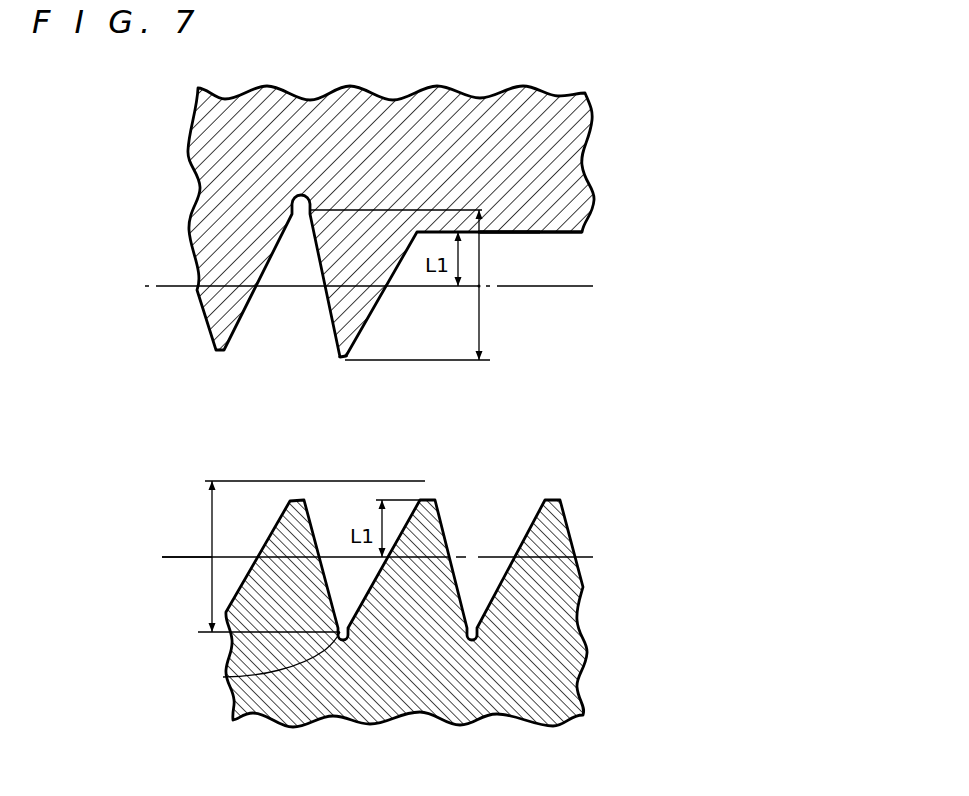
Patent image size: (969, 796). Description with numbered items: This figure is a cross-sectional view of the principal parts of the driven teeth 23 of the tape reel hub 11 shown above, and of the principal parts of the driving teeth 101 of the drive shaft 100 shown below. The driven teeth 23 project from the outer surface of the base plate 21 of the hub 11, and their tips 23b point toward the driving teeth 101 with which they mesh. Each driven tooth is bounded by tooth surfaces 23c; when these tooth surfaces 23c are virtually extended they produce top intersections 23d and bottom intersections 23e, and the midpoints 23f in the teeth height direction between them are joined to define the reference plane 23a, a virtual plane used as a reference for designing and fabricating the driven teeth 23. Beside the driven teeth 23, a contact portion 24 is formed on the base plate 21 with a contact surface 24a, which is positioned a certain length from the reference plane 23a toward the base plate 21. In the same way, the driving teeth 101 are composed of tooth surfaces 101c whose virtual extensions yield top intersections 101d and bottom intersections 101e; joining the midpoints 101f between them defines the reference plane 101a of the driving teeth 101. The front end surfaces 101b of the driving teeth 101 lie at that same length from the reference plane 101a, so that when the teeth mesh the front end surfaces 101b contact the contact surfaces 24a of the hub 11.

The hub 11 is at (402, 238).
The base plate 21 is at (580, 136).
The driven teeth 23 is at (197, 292).
The reference plane 23a is at (552, 289).
The tooth tips 23b is at (342, 358).
The tooth surfaces 23c is at (200, 300).
The top intersections 23d is at (348, 356).
The bottom intersections 23e is at (300, 200).
The midpoints 23f is at (488, 289).
The contact portions 24 is at (560, 255).
The contact surfaces 24a is at (498, 233).
The drive shaft 100 is at (423, 570).
The driving teeth 101 is at (572, 547).
The reference plane 101a is at (190, 557).
The front end surfaces 101b is at (304, 500).
The tooth surfaces 101c is at (262, 537).
The top intersections 101d is at (430, 499).
The bottom intersections 101e is at (223, 677).
The midpoints 101f is at (212, 557).